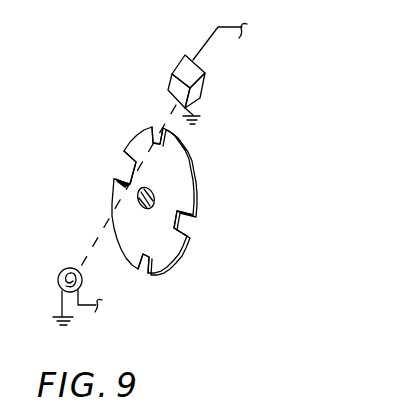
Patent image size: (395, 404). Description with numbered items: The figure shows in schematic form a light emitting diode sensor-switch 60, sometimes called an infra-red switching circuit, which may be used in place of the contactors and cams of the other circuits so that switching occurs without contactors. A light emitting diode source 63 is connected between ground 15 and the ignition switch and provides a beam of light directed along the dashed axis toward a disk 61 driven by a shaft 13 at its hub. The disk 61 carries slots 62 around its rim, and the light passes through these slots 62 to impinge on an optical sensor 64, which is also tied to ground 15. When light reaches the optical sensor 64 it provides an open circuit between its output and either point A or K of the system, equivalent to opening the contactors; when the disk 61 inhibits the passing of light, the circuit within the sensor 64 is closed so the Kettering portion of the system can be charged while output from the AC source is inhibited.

The light emitting diode sensor-switch 60 is at (95, 116).
The disk 61 is at (192, 159).
The slots 62 is at (168, 128).
The shaft 13 is at (159, 178).
The optical sensor 64 is at (200, 92).
The ground connection 15 is at (200, 114).
The light emitting diode source 63 is at (69, 268).